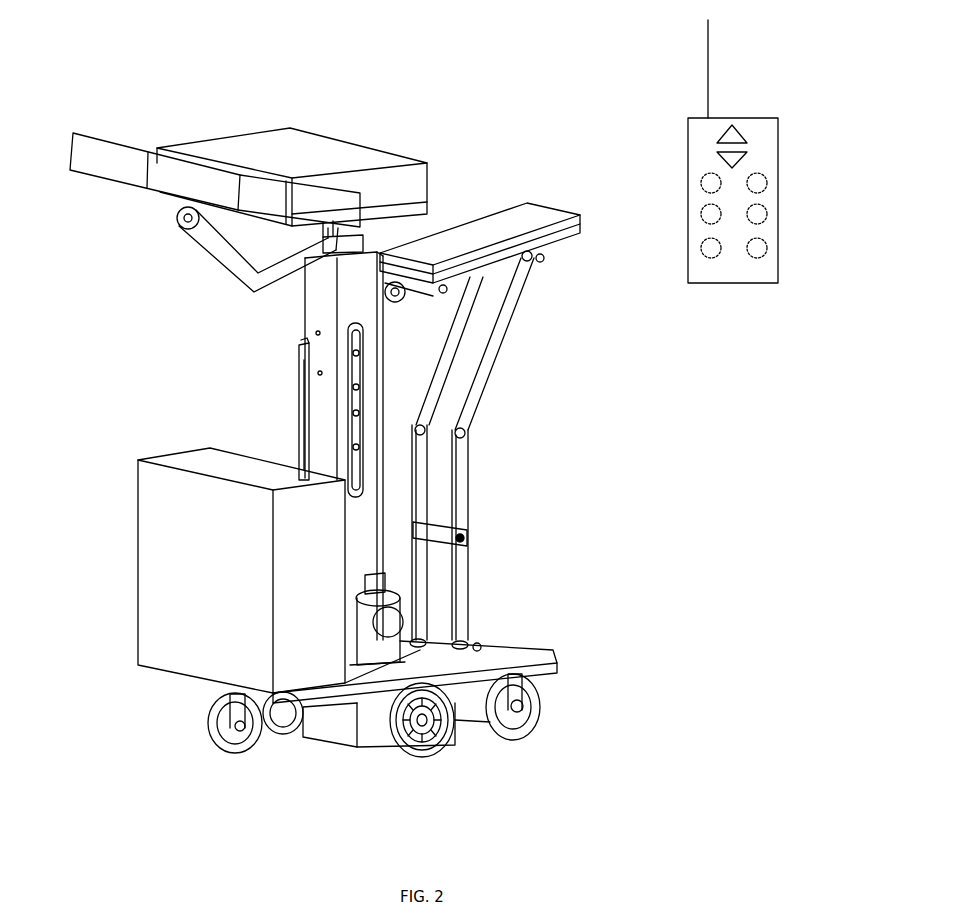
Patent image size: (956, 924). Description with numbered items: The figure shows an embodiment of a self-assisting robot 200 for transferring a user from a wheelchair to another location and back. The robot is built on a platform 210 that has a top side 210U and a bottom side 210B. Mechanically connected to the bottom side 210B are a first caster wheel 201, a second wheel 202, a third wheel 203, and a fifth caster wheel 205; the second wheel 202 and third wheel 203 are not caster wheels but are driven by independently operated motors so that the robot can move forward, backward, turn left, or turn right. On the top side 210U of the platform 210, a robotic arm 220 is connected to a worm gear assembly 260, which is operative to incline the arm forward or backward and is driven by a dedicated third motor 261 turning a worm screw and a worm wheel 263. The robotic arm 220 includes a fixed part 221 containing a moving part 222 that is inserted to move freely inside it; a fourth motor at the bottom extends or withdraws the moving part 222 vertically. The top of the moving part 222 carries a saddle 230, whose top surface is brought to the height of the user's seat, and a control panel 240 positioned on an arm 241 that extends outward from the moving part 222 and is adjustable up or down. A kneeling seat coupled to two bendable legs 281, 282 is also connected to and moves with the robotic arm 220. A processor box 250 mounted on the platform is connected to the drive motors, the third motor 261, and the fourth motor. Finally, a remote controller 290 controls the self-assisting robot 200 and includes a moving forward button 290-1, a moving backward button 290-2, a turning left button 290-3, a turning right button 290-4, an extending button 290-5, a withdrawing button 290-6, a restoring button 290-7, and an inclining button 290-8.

The self-assisting robot 200 is at (505, 92).
The first caster wheel 201 is at (220, 743).
The second wheel 202 is at (284, 728).
The third wheel 203 is at (431, 753).
The fifth caster wheel 205 is at (523, 733).
The platform 210 is at (558, 660).
The top side of platform 210U is at (518, 640).
The bottom side of platform 210B is at (550, 672).
The robotic arm 220 is at (273, 313).
The fixed part 221 is at (381, 364).
The moving part 222 is at (363, 244).
The saddle 230 is at (362, 143).
The control panel 240 is at (90, 133).
The arm 241 is at (205, 245).
The processor box 250 is at (171, 453).
The worm gear assembly 260 is at (548, 203).
The third motor 261 is at (298, 392).
The worm wheel 263 is at (383, 601).
The bendable leg 281 is at (413, 426).
The bendable leg 282 is at (518, 302).
The remote controller 290 is at (742, 83).
The moving forward button 290-1 is at (742, 128).
The moving backward button 290-2 is at (748, 155).
The turning left button 290-3 is at (702, 181).
The turning right button 290-4 is at (767, 183).
The extending button 290-5 is at (702, 216).
The withdrawing button 290-6 is at (768, 221).
The restoring button 290-7 is at (702, 250).
The inclining button 290-8 is at (767, 250).